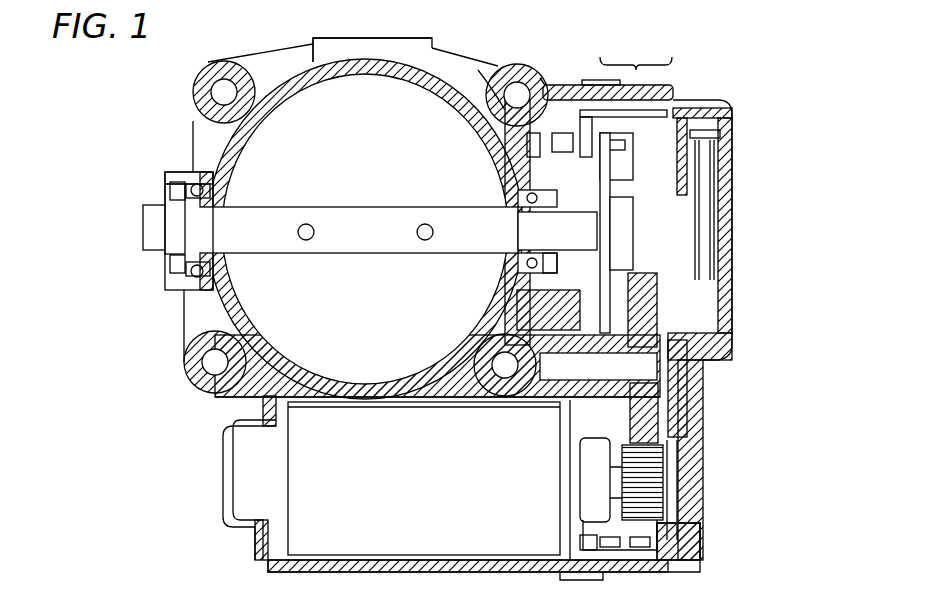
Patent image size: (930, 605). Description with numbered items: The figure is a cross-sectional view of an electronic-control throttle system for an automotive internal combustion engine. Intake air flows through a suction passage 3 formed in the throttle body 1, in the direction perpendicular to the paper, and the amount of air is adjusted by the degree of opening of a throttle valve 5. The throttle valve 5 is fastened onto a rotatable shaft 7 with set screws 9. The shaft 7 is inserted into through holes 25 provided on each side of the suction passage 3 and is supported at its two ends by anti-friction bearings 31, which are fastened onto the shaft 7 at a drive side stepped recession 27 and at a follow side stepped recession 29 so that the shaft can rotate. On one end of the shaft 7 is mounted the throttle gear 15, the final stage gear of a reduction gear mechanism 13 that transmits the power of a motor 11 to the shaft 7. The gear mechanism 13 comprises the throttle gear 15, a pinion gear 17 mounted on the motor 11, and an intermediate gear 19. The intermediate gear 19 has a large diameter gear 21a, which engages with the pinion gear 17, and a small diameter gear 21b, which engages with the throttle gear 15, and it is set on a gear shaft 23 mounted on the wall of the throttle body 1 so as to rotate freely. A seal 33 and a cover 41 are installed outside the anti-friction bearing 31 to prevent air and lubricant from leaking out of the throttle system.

The throttle body 1 is at (411, 215).
The suction passage 3 is at (310, 72).
The throttle valve 5 is at (397, 93).
The rotatable shaft 7 is at (186, 172).
The set screws 9 is at (300, 238).
The motor 11 is at (312, 490).
The reduction gear mechanism 13 is at (637, 179).
The throttle gear 15 is at (607, 235).
The pinion gear 17 is at (643, 490).
The intermediate gear 19 is at (665, 342).
The large diameter gear 21a is at (648, 415).
The small diameter gear 21b is at (687, 337).
The gear shaft 23 is at (690, 397).
The through holes 25 is at (203, 170).
The drive side stepped recession 27 is at (533, 195).
The follow side stepped recession 29 is at (175, 172).
The bearings 31 is at (182, 288).
The seal 33 is at (170, 258).
The cover 41 is at (167, 188).